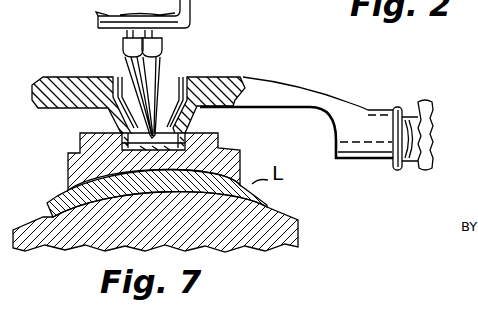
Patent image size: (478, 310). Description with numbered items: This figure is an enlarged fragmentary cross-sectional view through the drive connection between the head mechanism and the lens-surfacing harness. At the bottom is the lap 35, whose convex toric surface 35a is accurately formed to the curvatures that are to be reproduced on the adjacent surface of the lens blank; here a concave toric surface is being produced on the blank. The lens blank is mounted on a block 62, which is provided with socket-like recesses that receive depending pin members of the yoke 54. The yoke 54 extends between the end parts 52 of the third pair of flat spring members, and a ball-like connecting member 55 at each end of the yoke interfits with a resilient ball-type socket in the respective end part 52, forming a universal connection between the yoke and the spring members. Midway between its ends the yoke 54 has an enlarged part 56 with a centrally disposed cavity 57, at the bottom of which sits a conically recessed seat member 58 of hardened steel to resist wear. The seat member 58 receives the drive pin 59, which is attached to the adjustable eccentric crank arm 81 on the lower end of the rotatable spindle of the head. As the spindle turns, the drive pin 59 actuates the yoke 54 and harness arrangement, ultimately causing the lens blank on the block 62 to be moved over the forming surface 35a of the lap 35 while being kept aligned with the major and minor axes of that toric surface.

The eccentric crank arm 81 is at (183, 8).
The drive pin 59 is at (160, 64).
The cavity 57 is at (190, 77).
The seat member 58 is at (165, 124).
The enlarged part 56 is at (107, 111).
The yoke 54 is at (297, 99).
The ball-like connecting member 55 is at (400, 125).
The end part 52 is at (430, 115).
The block 62 is at (233, 157).
The toric surface 35a is at (277, 207).
The lap 35 is at (298, 221).